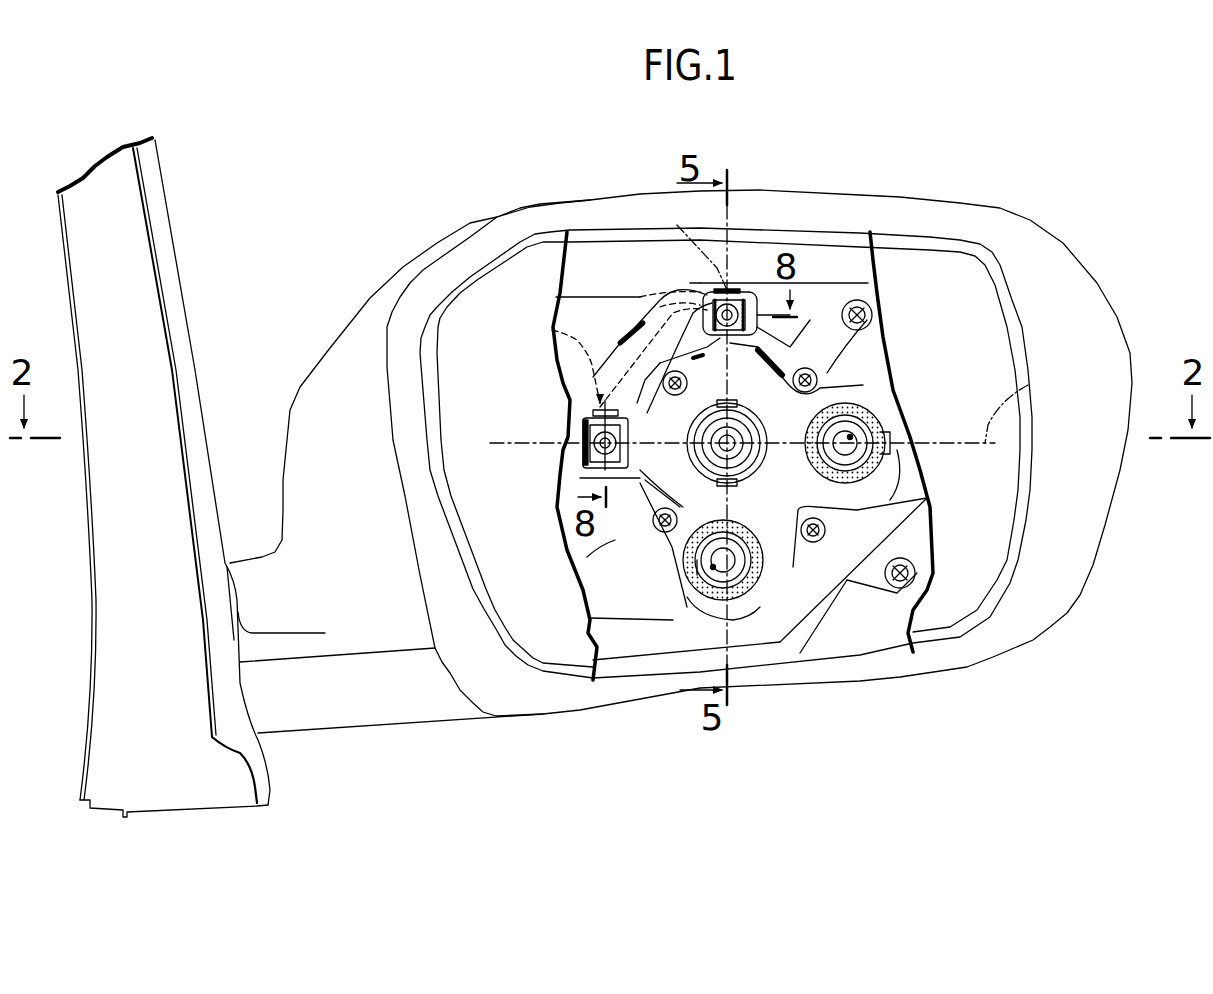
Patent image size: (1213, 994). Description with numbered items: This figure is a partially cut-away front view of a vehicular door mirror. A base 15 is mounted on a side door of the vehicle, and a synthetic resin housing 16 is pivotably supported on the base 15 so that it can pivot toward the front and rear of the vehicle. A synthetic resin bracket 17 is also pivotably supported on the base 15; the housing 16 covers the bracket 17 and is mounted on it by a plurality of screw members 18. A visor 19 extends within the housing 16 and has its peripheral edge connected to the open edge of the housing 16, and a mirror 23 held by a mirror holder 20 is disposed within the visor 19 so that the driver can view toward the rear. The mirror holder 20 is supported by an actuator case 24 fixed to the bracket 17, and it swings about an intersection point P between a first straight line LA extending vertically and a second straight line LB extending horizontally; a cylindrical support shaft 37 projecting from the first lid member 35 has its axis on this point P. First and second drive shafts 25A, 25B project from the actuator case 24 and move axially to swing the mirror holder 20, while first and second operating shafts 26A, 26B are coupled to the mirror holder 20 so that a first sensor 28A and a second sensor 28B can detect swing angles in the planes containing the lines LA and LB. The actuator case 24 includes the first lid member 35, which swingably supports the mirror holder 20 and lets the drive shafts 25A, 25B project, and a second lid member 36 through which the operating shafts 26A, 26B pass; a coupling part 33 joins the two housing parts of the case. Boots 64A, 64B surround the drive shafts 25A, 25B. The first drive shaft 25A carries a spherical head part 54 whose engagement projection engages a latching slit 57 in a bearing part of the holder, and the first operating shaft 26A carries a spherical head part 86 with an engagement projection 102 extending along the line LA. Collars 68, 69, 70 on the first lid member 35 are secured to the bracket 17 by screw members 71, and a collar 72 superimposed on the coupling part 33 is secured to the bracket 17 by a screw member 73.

The base 15 is at (180, 355).
The housing 16 is at (360, 360).
The bracket 17 is at (823, 303).
The screw members 18 is at (870, 318).
The visor 19 is at (1045, 247).
The mirror holder 20 is at (978, 243).
The mirror 23 is at (940, 262).
The actuator case 24 is at (808, 557).
The first drive shaft 25A is at (713, 567).
The second drive shaft 25B is at (853, 427).
The first operating shaft 26A is at (745, 292).
The second operating shaft 26B is at (580, 468).
The first sensor 28A is at (690, 288).
The second sensor 28B is at (552, 329).
The coupling part 33 is at (640, 453).
The first lid member 35 is at (897, 450).
The second lid member 36 is at (760, 300).
The support shaft 37 is at (747, 440).
The spherical head part 54 is at (787, 602).
The latching slit 57 is at (676, 620).
The boot 64A is at (697, 563).
The boot 64B is at (880, 432).
The collar 68 is at (805, 557).
The collar 69 is at (587, 557).
The collar 70 is at (867, 320).
The screw members 71 is at (807, 365).
The collar 72 is at (658, 398).
The screw member 73 is at (675, 380).
The spherical head part 86 is at (757, 326).
The engagement projection 102 is at (668, 283).
The first straight line LA is at (694, 245).
The second straight line LB is at (1023, 406).
The intersection point P is at (740, 430).